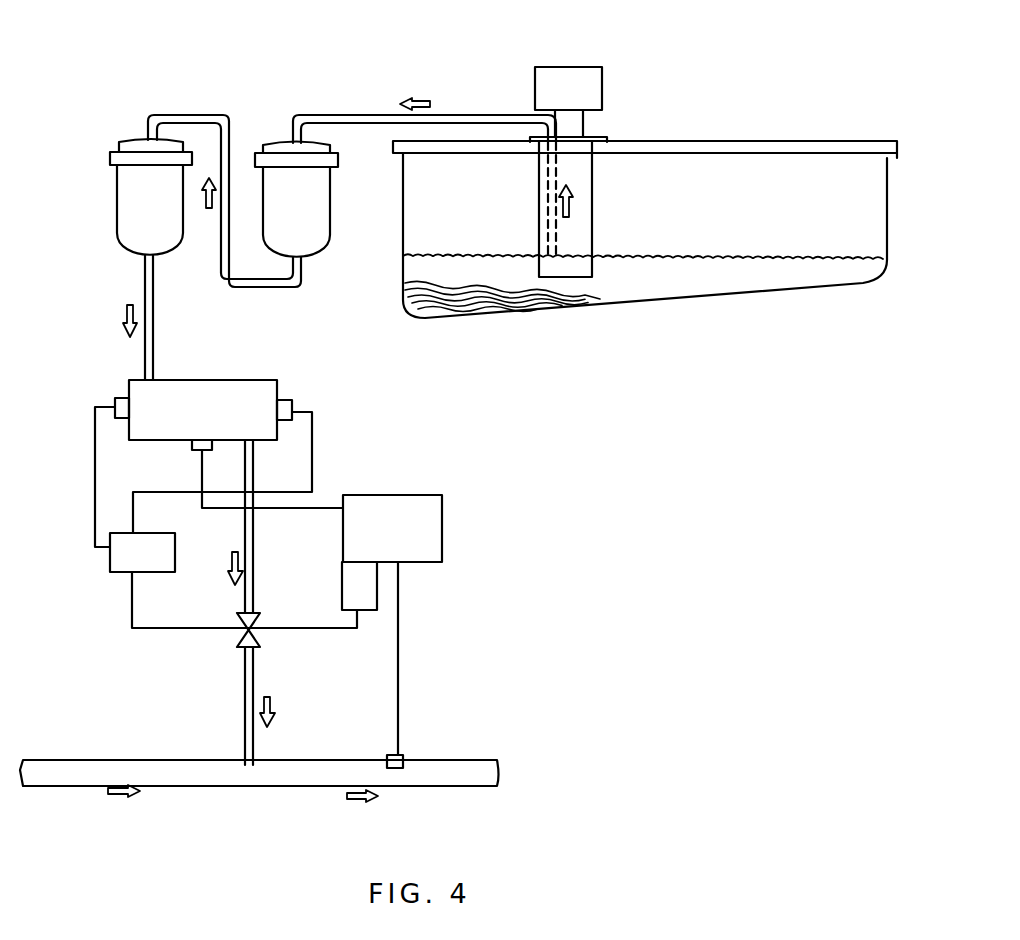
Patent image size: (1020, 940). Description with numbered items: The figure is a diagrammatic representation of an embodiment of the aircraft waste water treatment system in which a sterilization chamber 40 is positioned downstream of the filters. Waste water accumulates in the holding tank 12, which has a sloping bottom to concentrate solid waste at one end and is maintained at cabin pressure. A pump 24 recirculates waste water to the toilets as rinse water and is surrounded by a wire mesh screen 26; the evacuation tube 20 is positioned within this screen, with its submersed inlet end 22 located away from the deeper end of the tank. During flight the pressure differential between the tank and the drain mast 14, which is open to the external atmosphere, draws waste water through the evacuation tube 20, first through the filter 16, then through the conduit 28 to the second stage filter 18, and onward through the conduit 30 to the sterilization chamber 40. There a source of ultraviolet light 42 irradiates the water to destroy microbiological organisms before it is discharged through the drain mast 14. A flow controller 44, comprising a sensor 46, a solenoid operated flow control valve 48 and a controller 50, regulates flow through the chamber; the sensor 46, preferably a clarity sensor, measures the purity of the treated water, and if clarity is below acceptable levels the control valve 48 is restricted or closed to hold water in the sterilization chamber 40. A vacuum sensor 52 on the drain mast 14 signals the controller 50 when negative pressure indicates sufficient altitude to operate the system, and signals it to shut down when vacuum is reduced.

The holding tank 12 is at (637, 300).
The drain mast 14 is at (480, 770).
The filter 16 is at (315, 222).
The second stage filter 18 is at (128, 220).
The evacuation tube 20 is at (470, 120).
The inlet end 22 is at (553, 255).
The pump 24 is at (563, 67).
The wire mesh screen 26 is at (592, 243).
The conduit 28 is at (203, 116).
The conduit 30 is at (148, 318).
The sterilization chamber 40 is at (217, 390).
The source of ultraviolet light 42 is at (125, 558).
The flow controller 44 is at (350, 588).
The sensor 46 is at (192, 445).
The solenoid operated flow control valve 48 is at (253, 633).
The controller 50 is at (423, 523).
The vacuum sensor 52 is at (387, 757).